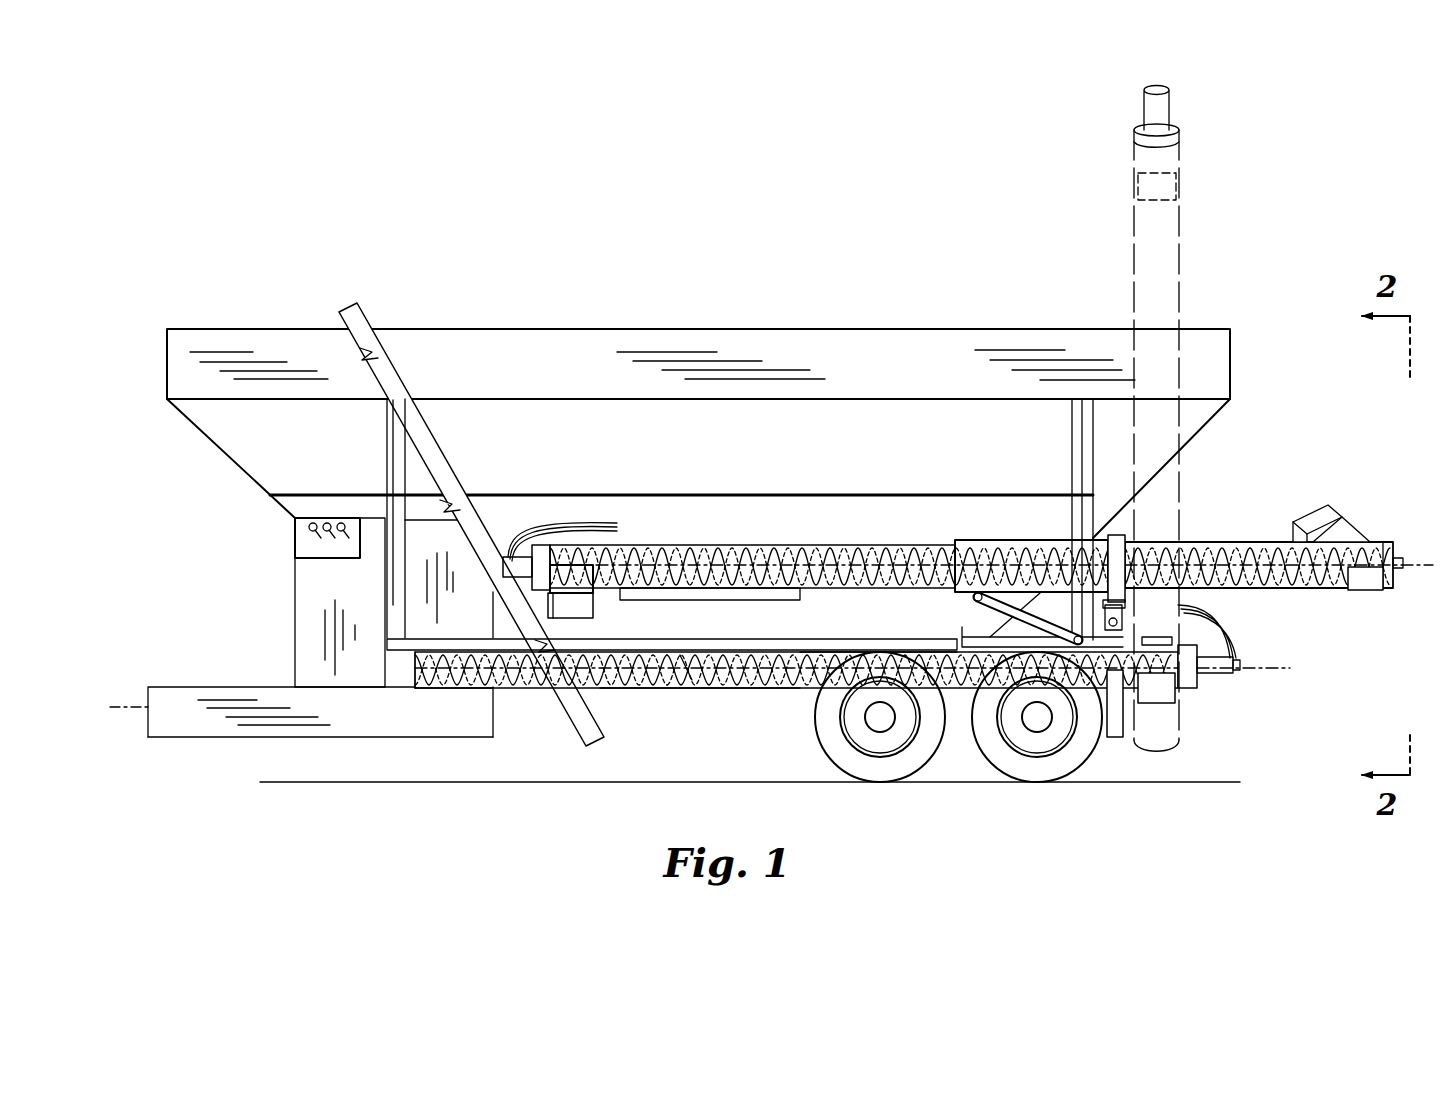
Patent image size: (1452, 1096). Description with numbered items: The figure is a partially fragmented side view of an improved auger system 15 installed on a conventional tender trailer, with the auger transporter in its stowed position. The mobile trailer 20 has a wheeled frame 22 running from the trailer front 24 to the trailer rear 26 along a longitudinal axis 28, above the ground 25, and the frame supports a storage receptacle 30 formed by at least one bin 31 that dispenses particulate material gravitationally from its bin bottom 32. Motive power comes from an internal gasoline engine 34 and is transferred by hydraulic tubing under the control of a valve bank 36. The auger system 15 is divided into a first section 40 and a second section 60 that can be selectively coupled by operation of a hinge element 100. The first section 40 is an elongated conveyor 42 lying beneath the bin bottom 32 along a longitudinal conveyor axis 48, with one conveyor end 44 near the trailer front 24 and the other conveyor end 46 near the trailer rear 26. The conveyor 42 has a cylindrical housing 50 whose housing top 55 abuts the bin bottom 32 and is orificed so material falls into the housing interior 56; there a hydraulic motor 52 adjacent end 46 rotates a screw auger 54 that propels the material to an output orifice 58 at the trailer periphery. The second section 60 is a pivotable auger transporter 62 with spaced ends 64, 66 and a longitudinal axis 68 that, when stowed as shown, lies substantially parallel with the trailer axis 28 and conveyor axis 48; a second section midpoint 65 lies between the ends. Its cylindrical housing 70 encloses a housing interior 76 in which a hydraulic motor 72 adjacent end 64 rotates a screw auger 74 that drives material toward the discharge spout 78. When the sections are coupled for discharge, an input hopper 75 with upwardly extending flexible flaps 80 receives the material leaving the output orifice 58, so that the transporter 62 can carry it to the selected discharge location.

The auger system 15 is at (1300, 420).
The mobile trailer 20 is at (243, 500).
The wheeled frame 22 is at (228, 687).
The trailer front 24 is at (145, 738).
The ground 25 is at (537, 770).
The trailer rear 26 is at (1130, 740).
The longitudinal axis 28 is at (120, 707).
The storage receptacle 30 is at (559, 363).
The bin 31 is at (700, 343).
The bin bottom 32 is at (593, 690).
The internal gasoline engine 34 is at (307, 597).
The valve bank 36 is at (302, 545).
The first section 40 is at (962, 697).
The elongated conveyor 42 is at (438, 697).
The conveyor end 44 is at (413, 672).
The conveyor end 46 is at (1200, 687).
The longitudinal conveyor axis 48 is at (1267, 663).
The cylindrical housing 50 is at (738, 652).
The hydraulic motor 52 is at (1220, 675).
The screw auger 54 is at (800, 643).
The housing top 55 is at (685, 652).
The housing interior 56 is at (695, 690).
The output orifice 58 is at (1168, 745).
The second section 60 is at (885, 530).
The auger transporter 62 is at (1207, 538).
The auger transporter end 64 is at (545, 545).
The second section midpoint 65 is at (950, 540).
The auger transporter end 66 is at (1395, 588).
The auger transporter longitudinal axis 68 is at (1440, 563).
The cylindrical housing 70 is at (728, 548).
The hydraulic motor 72 is at (508, 557).
The screw auger 74 is at (630, 548).
The input hopper 75 is at (1350, 530).
The housing interior 76 is at (663, 547).
The discharge spout 78 is at (575, 608).
The flexible flaps 80 is at (1313, 516).
The hinge element 100 is at (1040, 522).